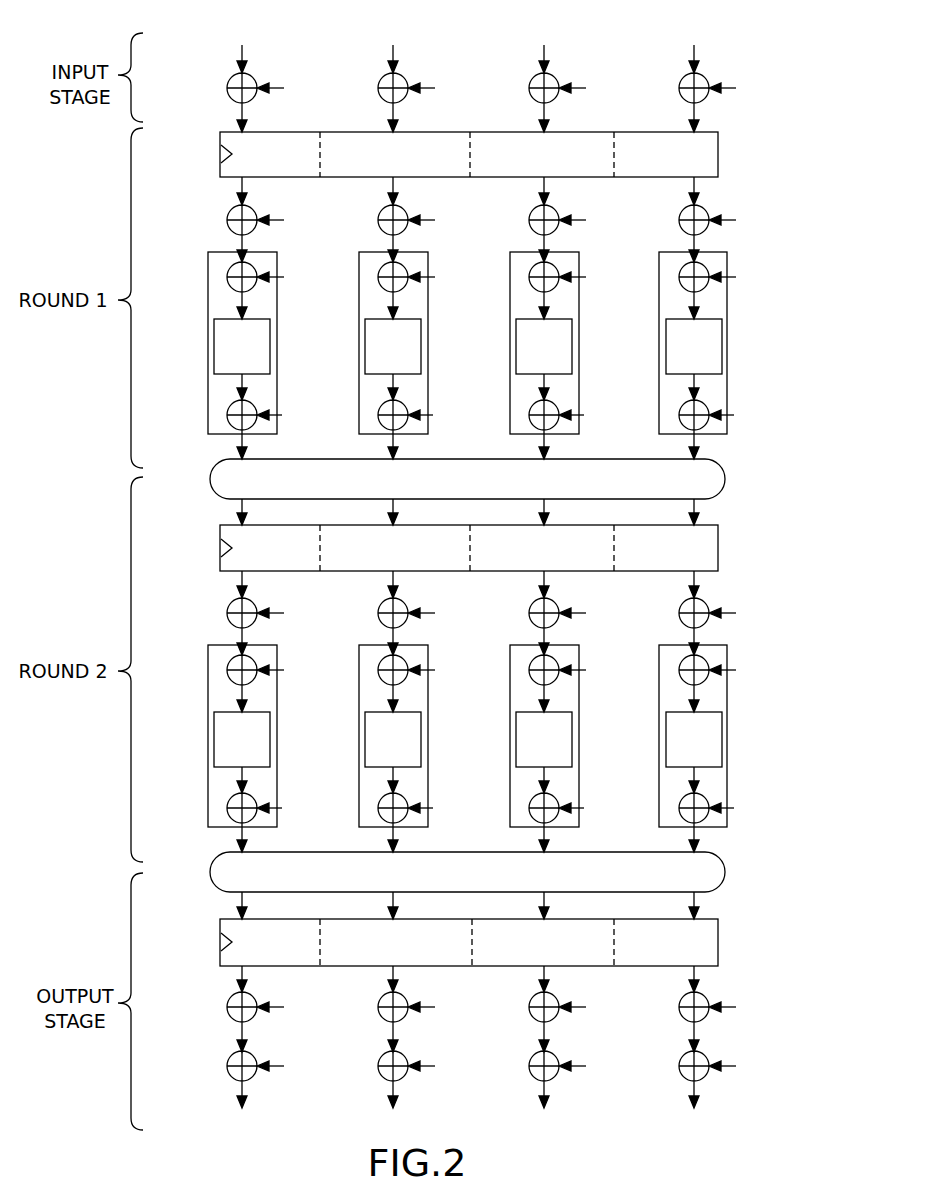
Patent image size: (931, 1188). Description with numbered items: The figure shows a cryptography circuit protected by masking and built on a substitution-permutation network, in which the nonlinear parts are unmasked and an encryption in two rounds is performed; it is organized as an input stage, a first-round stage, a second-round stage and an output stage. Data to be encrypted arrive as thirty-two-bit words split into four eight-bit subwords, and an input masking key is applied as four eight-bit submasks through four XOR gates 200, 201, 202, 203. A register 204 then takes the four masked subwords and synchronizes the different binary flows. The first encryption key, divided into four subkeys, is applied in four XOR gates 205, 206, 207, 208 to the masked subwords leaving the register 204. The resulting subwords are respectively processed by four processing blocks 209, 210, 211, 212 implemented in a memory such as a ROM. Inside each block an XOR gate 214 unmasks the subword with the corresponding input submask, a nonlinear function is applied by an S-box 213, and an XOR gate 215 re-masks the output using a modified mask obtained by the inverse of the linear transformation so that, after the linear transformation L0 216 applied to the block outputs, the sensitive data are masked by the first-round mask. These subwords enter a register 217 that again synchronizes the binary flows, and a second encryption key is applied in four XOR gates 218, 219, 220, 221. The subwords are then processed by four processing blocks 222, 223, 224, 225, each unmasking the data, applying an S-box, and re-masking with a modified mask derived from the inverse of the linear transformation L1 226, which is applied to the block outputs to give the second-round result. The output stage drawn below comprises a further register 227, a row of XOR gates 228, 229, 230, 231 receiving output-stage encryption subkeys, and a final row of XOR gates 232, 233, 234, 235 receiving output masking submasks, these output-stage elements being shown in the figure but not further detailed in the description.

The XOR gate 200 is at (228, 90).
The XOR gate 201 is at (379, 85).
The XOR gate 202 is at (530, 85).
The XOR gate 203 is at (680, 85).
The register 204 is at (718, 145).
The XOR gate 205 is at (228, 221).
The XOR gate 206 is at (379, 221).
The XOR gate 207 is at (530, 221).
The XOR gate 208 is at (680, 221).
The processing block 209 is at (209, 318).
The processing block 210 is at (359, 343).
The processing block 211 is at (510, 343).
The processing block 212 is at (727, 347).
The S-box 213 is at (214, 346).
The XOR gate 214 is at (228, 279).
The XOR gate 215 is at (228, 414).
The linear transformation L0 216 is at (725, 472).
The register 217 is at (718, 537).
The XOR gate 218 is at (228, 614).
The XOR gate 219 is at (379, 614).
The XOR gate 220 is at (530, 614).
The XOR gate 221 is at (680, 614).
The processing block 222 is at (208, 736).
The processing block 223 is at (359, 736).
The processing block 224 is at (510, 736).
The processing block 225 is at (727, 740).
The linear transformation L1 226 is at (725, 866).
The state register 227 is at (718, 931).
The output stage key XOR gate (k2c[3]) 228 is at (228, 1008).
The output stage key XOR gate (k2c[2]) 229 is at (379, 1008).
The output stage key XOR gate (k2c[1]) 230 is at (530, 1008).
The output stage key XOR gate (k2c[0]) 231 is at (680, 1008).
The output stage XOR gate (k2i[3]) 232 is at (228, 1067).
The output stage XOR gate (k2i[2]) 233 is at (379, 1067).
The output stage XOR gate (k2i[1]) 234 is at (530, 1067).
The output stage XOR gate (k2i[0]) 235 is at (680, 1067).